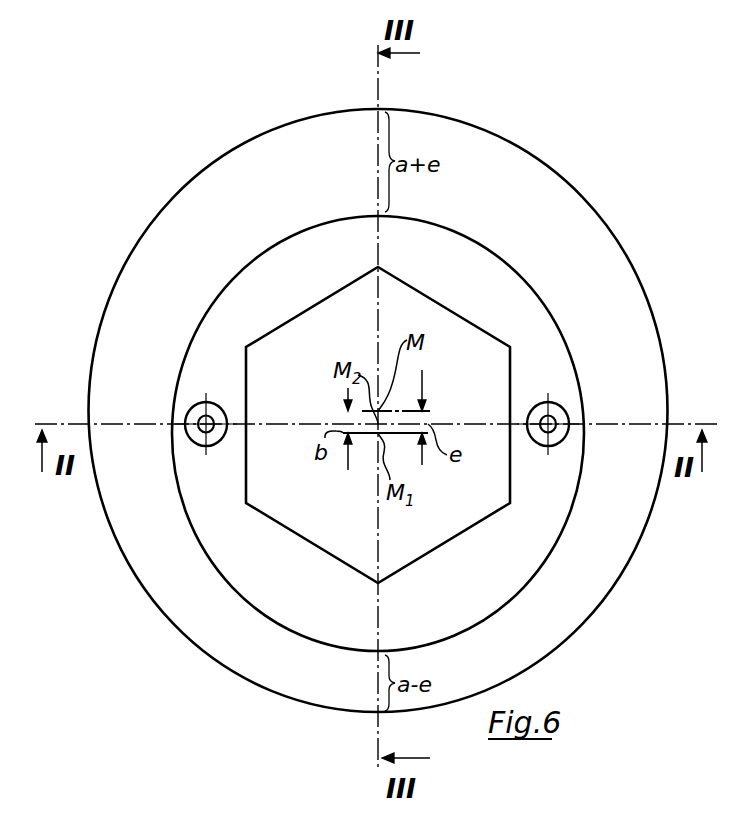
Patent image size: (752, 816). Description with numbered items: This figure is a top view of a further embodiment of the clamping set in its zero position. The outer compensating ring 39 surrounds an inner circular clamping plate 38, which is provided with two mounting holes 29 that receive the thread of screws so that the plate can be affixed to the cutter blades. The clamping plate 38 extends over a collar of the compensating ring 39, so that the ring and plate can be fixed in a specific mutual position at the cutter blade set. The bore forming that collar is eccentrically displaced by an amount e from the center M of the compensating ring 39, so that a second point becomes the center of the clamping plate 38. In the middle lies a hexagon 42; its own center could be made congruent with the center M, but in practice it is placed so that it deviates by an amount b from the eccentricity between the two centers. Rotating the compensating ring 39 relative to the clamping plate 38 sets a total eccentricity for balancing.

The mounting holes 29 is at (217, 432).
The clamping plate 38 is at (552, 535).
The compensating ring 39 is at (563, 196).
The hexagon 42 is at (447, 346).